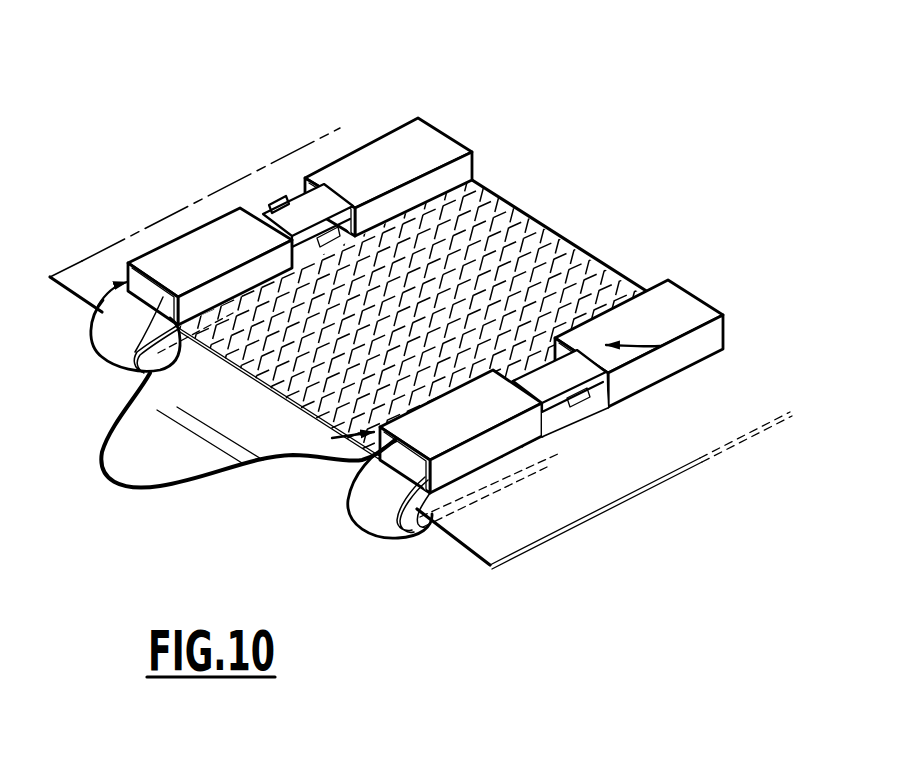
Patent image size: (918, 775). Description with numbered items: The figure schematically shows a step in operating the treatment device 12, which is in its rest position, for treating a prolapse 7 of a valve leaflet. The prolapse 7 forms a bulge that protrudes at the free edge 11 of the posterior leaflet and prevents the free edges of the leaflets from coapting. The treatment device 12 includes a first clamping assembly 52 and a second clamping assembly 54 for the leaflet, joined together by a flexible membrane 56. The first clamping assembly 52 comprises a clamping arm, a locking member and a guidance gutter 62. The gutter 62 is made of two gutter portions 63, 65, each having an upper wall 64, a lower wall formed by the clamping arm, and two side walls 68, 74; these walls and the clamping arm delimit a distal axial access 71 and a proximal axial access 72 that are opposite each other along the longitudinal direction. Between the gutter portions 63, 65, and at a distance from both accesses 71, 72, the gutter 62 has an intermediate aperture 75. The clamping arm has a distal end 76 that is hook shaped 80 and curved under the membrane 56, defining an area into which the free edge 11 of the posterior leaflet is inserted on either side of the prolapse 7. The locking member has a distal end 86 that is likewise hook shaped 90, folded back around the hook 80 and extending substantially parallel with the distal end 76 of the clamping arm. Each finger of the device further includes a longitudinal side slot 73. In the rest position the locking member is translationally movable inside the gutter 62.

The prolapse 7 is at (226, 478).
The free edge 11 is at (100, 253).
The treatment device 12 is at (404, 118).
The first clamping assembly 52 is at (283, 206).
The second clamping assembly 54 is at (681, 357).
The flexible membrane 56 is at (543, 276).
The guidance gutter 62 is at (227, 250).
The gutter portion 63 is at (187, 256).
The upper wall 64 is at (503, 414).
The gutter portion 65 is at (400, 160).
The side wall 68 is at (688, 355).
The distal axial access 71 is at (78, 298).
The proximal axial access 72 is at (443, 132).
The longitudinal side slot 73 is at (222, 310).
The side wall 74 is at (463, 170).
The intermediate aperture 75 is at (293, 187).
The distal end 76 is at (148, 348).
The hook 80 is at (180, 374).
The distal end 86 is at (115, 470).
The hook shape 90 is at (153, 369).